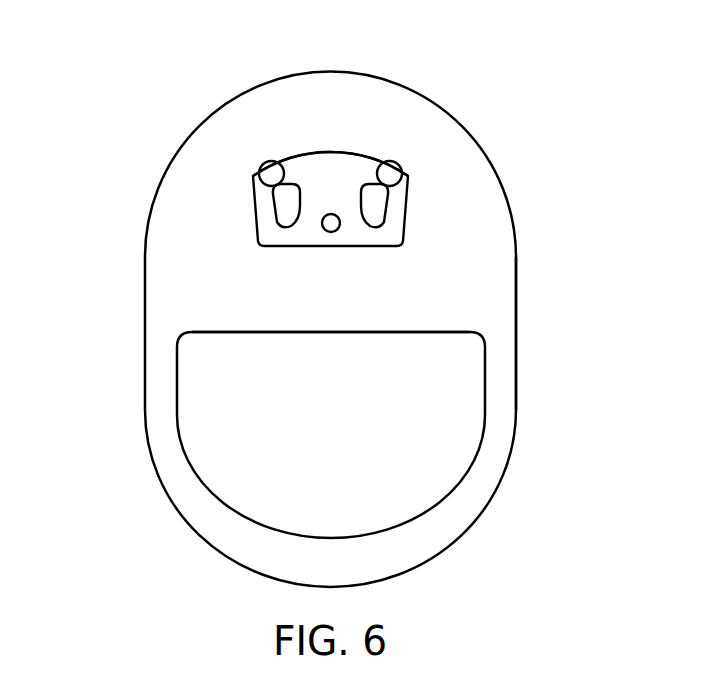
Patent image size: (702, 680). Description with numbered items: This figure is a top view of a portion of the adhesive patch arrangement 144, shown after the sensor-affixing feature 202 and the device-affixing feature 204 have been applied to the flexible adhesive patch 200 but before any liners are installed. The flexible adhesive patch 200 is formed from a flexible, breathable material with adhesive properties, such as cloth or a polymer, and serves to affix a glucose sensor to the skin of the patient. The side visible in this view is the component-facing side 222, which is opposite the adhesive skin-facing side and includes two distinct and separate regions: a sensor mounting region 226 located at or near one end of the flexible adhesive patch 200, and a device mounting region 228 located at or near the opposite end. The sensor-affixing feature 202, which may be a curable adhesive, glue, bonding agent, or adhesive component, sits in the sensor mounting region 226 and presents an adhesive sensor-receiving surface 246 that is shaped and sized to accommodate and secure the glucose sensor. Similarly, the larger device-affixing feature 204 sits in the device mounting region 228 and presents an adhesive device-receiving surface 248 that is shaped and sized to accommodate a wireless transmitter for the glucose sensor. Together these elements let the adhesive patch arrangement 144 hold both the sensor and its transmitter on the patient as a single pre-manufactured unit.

The adhesive patch arrangement 144 is at (287, 128).
The flexible adhesive patch 200 is at (410, 113).
The sensor-affixing feature 202 is at (399, 222).
The device-affixing feature 204 is at (248, 349).
The component-facing side 222 is at (502, 287).
The sensor mounting region 226 is at (179, 199).
The device mounting region 228 is at (114, 375).
The adhesive sensor-receiving surface 246 is at (328, 167).
The adhesive device-receiving surface 248 is at (391, 357).